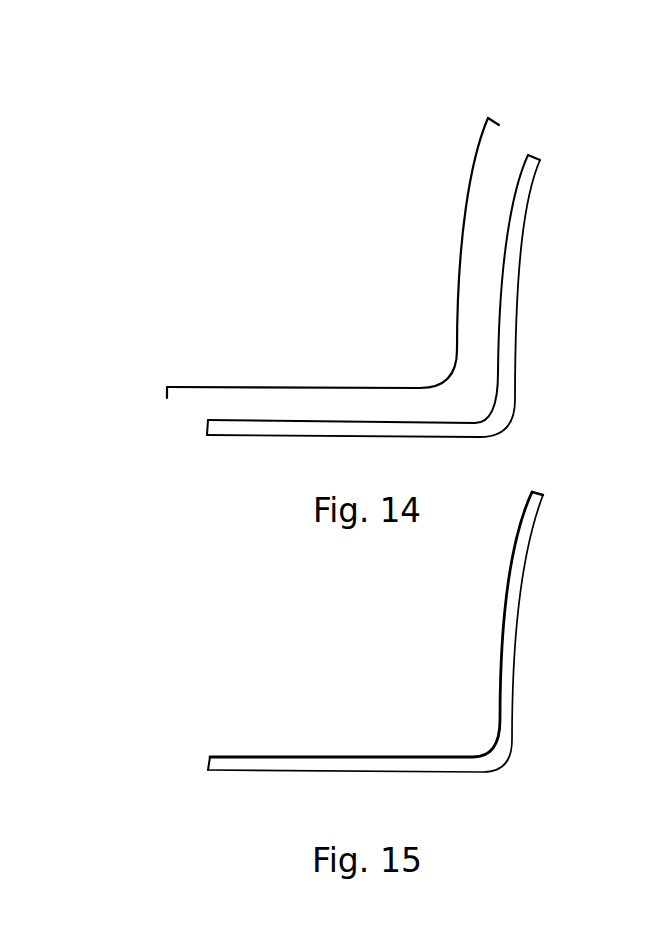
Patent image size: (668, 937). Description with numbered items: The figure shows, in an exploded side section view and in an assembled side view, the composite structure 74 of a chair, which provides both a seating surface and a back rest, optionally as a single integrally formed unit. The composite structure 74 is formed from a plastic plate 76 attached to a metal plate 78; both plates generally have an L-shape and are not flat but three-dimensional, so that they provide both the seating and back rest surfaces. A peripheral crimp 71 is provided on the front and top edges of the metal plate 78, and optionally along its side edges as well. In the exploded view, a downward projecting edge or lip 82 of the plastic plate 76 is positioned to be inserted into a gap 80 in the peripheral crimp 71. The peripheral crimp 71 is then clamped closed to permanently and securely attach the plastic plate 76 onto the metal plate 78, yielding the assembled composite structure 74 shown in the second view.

In FIG. 14, the peripheral crimp 71 is at (341, 322).
In FIG. 15, the composite structure 74 is at (398, 632).
In FIG. 14, the plastic plate 76 is at (309, 254).
In FIG. 15, the plastic plate 76 is at (507, 585).
In FIG. 14, the metal plate 78 is at (375, 440).
In FIG. 15, the metal plate 78 is at (518, 653).
In FIG. 14, the gap 80 is at (544, 137).
In FIG. 14, the downward projecting edge or lip 82 is at (496, 95).